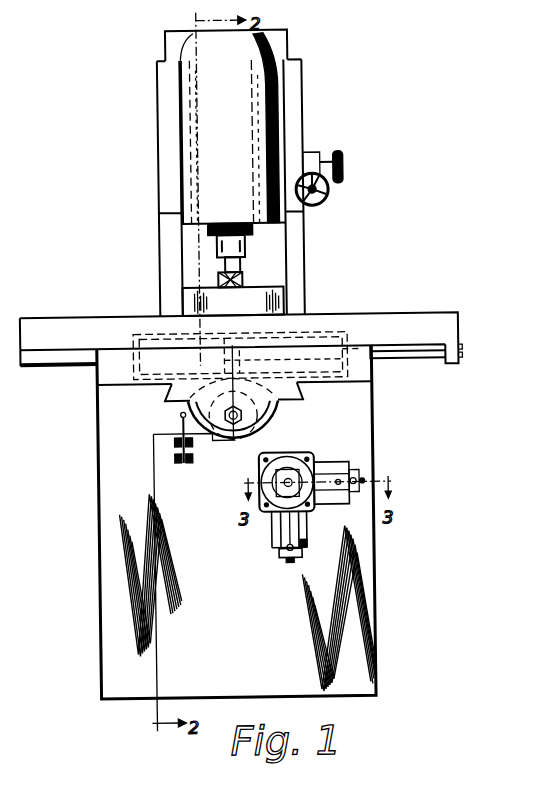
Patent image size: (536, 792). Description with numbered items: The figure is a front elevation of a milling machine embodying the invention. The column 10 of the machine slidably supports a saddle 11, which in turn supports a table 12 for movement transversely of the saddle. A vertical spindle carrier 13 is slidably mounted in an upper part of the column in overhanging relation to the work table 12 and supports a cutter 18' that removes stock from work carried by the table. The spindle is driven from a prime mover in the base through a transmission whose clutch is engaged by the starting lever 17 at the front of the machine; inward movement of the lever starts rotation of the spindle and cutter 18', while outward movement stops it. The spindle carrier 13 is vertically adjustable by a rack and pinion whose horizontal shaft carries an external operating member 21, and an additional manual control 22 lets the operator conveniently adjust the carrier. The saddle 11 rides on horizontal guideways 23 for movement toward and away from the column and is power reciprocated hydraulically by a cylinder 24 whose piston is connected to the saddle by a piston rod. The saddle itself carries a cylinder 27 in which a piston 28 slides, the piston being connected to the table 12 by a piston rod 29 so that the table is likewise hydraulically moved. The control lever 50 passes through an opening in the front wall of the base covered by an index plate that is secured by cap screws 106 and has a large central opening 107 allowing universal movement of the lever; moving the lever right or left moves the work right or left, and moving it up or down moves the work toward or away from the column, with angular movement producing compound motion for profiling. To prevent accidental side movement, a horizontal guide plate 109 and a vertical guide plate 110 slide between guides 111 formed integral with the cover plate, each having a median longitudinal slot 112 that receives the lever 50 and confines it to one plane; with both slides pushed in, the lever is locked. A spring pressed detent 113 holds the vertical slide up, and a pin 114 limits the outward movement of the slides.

The column 10 is at (105, 440).
The saddle 11 is at (97, 383).
The table 12 is at (402, 320).
The vertical spindle carrier 13 is at (250, 58).
The starting lever 17 is at (180, 415).
The cutter 18' is at (280, 255).
The external operating member 21 is at (346, 159).
The manual control 22 is at (330, 193).
The horizontal guideways 23 is at (306, 392).
The cylinder 24 is at (250, 424).
The cylinder 27 is at (134, 358).
The piston 28 is at (228, 358).
The piston rod 29 is at (420, 358).
The control lever 50 is at (287, 480).
The cap screws 106 is at (310, 454).
The central opening 107 is at (306, 498).
The horizontal guide plate 109 is at (357, 472).
The vertical guide plate 110 is at (299, 554).
The guides 111 is at (330, 464).
The median longitudinal slot 112 is at (333, 489).
The spring pressed detent 113 is at (304, 544).
The pin 114 is at (286, 559).